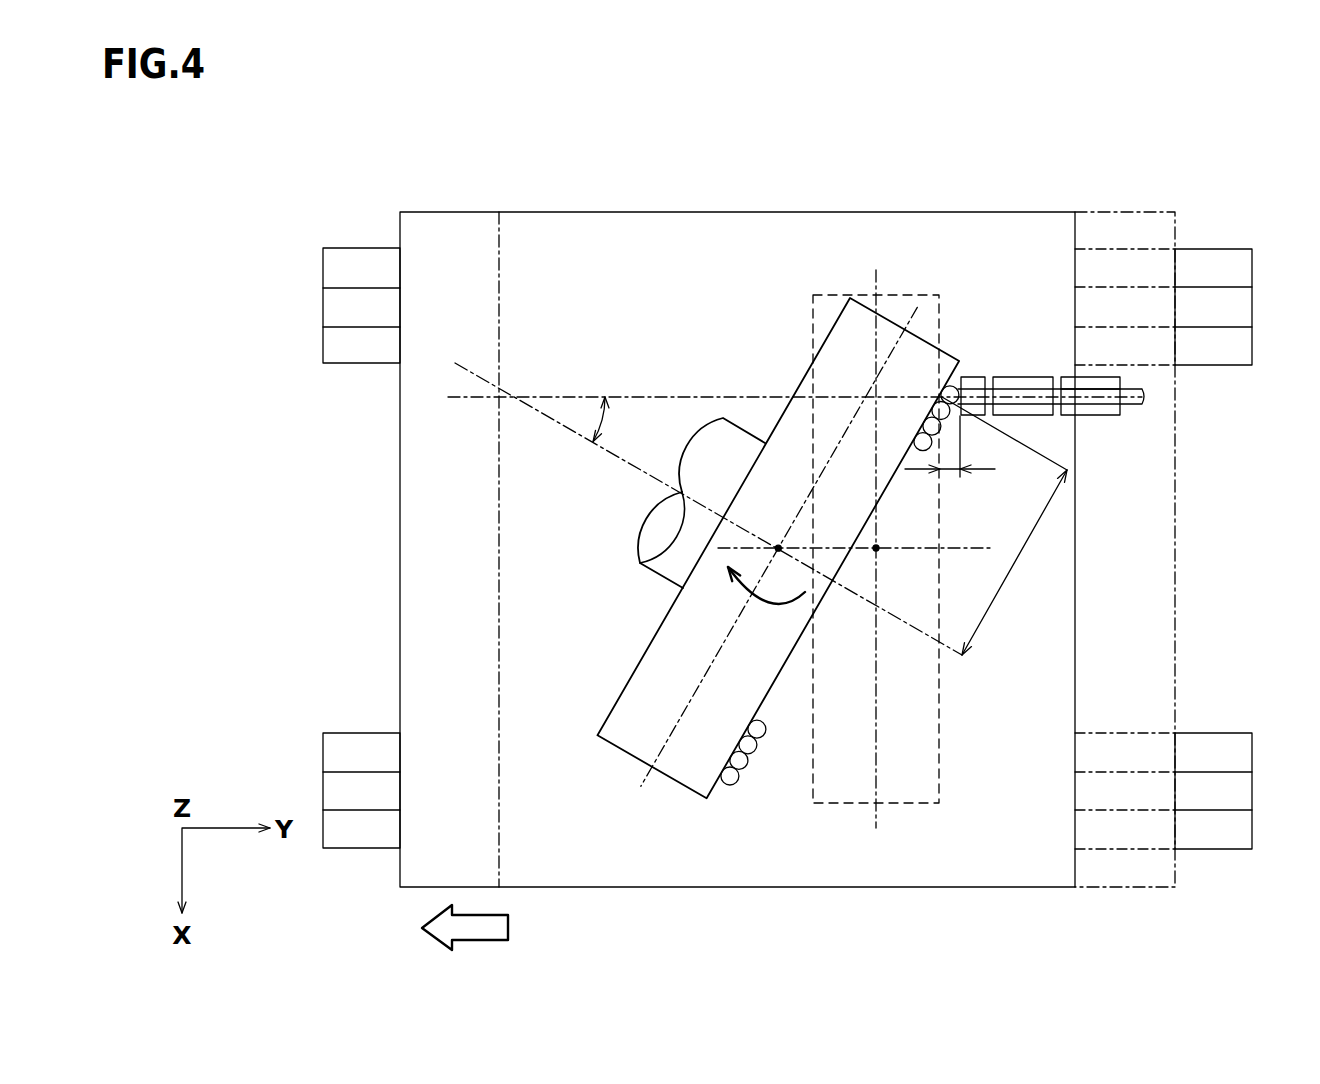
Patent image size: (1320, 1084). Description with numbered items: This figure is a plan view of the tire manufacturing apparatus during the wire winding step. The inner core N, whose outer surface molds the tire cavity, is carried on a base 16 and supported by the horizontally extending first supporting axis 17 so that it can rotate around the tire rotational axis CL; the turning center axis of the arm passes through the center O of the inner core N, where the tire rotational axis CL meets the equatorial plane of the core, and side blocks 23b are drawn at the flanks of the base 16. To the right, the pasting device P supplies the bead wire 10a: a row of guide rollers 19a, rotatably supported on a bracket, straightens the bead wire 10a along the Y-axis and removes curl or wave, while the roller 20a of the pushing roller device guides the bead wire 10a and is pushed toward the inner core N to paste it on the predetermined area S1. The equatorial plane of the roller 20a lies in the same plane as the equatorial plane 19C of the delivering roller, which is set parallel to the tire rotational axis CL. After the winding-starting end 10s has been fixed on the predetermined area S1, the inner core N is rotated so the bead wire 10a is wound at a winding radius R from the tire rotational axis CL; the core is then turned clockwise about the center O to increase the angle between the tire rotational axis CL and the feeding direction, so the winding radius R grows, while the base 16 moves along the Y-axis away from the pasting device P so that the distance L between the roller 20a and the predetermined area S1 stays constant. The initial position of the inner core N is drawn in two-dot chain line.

The base 16 is at (461, 235).
The first supporting axis 17 is at (660, 568).
The side support block 23b is at (1228, 264).
The winding-starting end 10s is at (921, 432).
The bead wire 10a is at (1123, 393).
The roller 20a is at (973, 378).
The guide rollers 19a is at (1037, 374).
The equatorial plane of the delivering roller 19C is at (1115, 395).
The inner core N is at (792, 440).
The center of the inner core O is at (778, 548).
The tire rotational axis CL is at (592, 443).
The pasting device P is at (1043, 423).
The winding radius R is at (1012, 562).
The distance L is at (950, 459).
The predetermined area S1 is at (767, 697).